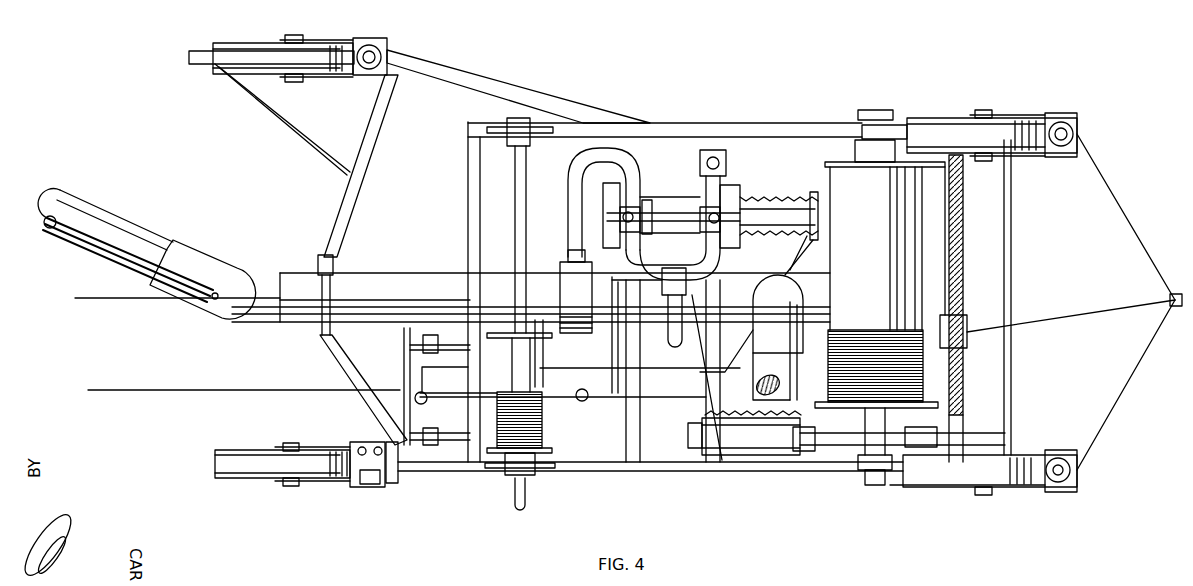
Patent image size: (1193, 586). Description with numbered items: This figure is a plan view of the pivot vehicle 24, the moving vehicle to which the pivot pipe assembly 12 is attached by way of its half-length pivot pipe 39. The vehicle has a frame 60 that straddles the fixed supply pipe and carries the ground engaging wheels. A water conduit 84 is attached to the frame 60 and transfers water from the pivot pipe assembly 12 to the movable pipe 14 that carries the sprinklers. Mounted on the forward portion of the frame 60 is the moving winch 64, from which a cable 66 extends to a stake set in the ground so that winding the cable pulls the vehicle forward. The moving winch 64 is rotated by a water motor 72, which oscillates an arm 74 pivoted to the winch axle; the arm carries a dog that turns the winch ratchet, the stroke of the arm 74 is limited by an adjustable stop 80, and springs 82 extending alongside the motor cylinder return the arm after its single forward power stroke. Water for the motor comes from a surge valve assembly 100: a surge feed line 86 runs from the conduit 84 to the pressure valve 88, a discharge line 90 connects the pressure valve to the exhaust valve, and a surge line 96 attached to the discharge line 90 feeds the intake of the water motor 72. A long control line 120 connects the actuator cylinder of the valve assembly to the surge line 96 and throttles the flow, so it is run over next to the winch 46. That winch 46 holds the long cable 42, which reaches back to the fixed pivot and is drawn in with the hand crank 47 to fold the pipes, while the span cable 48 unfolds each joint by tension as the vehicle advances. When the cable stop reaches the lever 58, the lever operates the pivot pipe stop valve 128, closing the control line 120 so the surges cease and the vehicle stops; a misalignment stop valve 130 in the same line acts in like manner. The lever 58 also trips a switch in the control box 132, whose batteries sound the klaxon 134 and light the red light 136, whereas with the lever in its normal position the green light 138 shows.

The pivot pipe assembly 12 is at (197, 239).
The movable pipe 14 is at (751, 337).
The pivot vehicle 24 is at (920, 74).
The pivot pipe 39 is at (142, 214).
The long cable 42 is at (258, 386).
The winch 46 is at (504, 378).
The hand crank 47 is at (528, 497).
The span cable 48 is at (128, 298).
The lever 58 is at (398, 360).
The frame 60 is at (700, 474).
The moving winch 64 is at (870, 295).
The cable 66 is at (1053, 316).
The water motor 72 is at (744, 433).
The arm 74 is at (826, 452).
The adjustable stop 80 is at (934, 426).
The springs 82 is at (760, 456).
The water conduit 84 is at (531, 297).
The surge feed line 86 is at (566, 192).
The pressure valve 88 is at (616, 204).
The discharge line 90 is at (692, 266).
The surge line 96 is at (666, 345).
The surge valve assembly 100 is at (756, 185).
The control line 120 is at (612, 354).
The pivot pipe stop valve 128 is at (416, 402).
The misalignment stop valve 130 is at (588, 401).
The control box 132 is at (398, 472).
The klaxon 134 is at (372, 485).
The red light 136 is at (356, 445).
The green light 138 is at (372, 445).